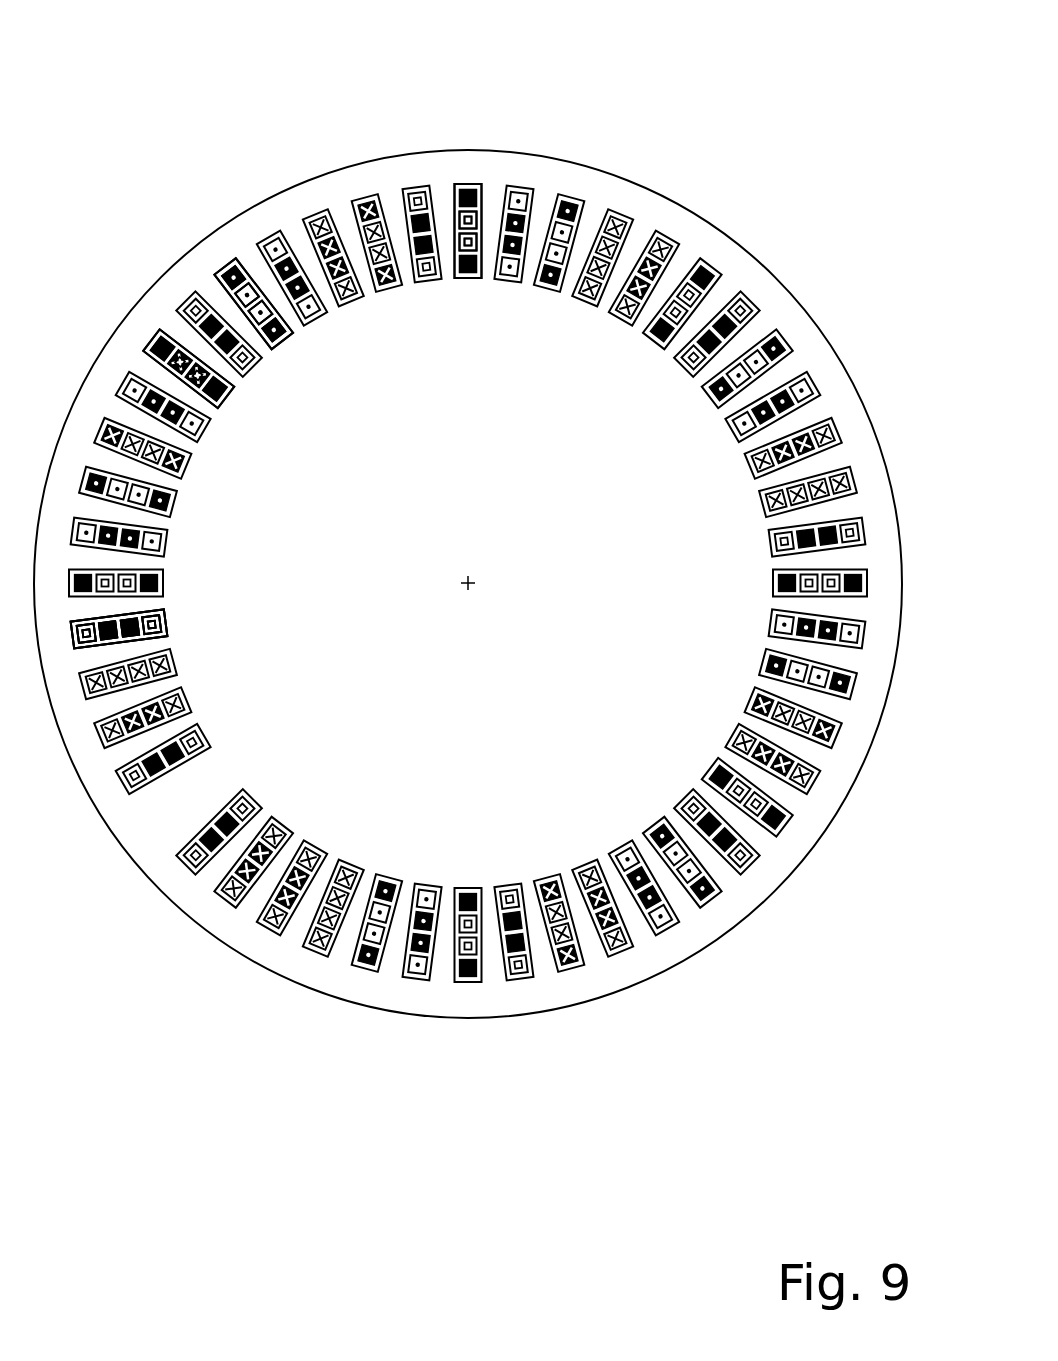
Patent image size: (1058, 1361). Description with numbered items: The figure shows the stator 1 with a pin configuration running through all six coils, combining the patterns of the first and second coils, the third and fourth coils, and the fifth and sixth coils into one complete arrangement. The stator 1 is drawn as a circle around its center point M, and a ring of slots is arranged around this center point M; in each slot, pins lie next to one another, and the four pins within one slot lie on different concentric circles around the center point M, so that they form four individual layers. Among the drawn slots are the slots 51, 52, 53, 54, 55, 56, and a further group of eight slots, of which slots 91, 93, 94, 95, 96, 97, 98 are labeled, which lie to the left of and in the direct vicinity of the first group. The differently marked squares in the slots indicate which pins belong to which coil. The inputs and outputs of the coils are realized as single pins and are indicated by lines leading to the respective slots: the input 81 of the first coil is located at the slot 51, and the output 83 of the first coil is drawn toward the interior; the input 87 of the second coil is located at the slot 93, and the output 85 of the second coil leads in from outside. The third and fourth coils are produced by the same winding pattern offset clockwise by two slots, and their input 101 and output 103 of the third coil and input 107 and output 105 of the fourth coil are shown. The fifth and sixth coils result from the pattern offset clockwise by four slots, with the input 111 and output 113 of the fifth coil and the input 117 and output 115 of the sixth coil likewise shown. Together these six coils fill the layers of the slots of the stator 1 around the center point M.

The stator 1 is at (240, 82).
The center point M is at (500, 602).
The slot 51 is at (484, 296).
The slot 52 is at (760, 282).
The slot 53 is at (862, 628).
The slot 54 is at (678, 790).
The slot 55 is at (479, 1000).
The slot 56 is at (272, 790).
The input of the first coil 81 is at (468, 184).
The output of the first coil 83 is at (393, 525).
The output of the second coil 85 is at (186, 301).
The input of the second coil 87 is at (404, 592).
The slot 91 is at (446, 296).
The slot 93 is at (188, 633).
The slot 94 is at (217, 910).
The slot 95 is at (529, 1000).
The slot 96 is at (678, 762).
The slot 97 is at (845, 500).
The slot 98 is at (655, 354).
The input of the third coil 101 is at (571, 198).
The output of the third coil 103 is at (410, 508).
The output of the fourth coil 105 is at (268, 238).
The input of the fourth coil 107 is at (404, 574).
The input of the fifth coil 111 is at (668, 238).
The output of the fifth coil 113 is at (430, 492).
The output of the sixth coil 115 is at (365, 198).
The input of the sixth coil 117 is at (408, 558).